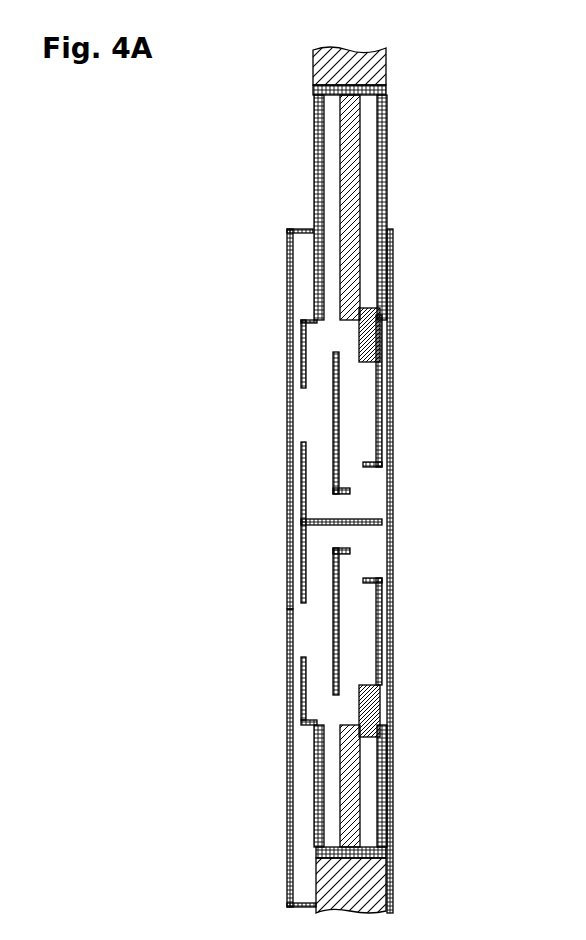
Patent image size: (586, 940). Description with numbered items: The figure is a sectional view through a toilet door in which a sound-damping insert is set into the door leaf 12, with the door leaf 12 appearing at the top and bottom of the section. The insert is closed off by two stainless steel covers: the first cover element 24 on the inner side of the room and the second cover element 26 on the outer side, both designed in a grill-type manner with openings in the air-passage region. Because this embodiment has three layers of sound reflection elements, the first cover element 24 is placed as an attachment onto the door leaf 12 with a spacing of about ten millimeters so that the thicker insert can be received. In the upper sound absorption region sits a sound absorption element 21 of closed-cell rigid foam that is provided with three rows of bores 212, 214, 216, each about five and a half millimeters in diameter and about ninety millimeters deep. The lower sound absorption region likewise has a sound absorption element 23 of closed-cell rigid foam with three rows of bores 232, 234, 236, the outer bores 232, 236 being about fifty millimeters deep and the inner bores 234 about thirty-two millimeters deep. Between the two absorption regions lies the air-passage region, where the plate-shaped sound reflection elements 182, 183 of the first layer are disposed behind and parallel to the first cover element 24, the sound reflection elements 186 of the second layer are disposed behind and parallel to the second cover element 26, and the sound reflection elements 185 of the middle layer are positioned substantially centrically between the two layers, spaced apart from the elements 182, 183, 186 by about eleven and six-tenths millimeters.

The door leaf 12 is at (372, 72).
The sound absorption element 21 is at (344, 223).
The bore 212 is at (332, 121).
The bore 214 is at (338, 153).
The bore 216 is at (370, 202).
The second cover element 26 is at (392, 258).
The first cover element 24 is at (288, 800).
The sound reflection element 182 is at (302, 364).
The sound reflection element 183 is at (302, 495).
The sound reflection element 185 is at (339, 397).
The sound reflection element 186 is at (378, 448).
The sound absorption element 23 is at (345, 774).
The outer bore 232 is at (330, 833).
The inner bore 234 is at (363, 782).
The outer bore 236 is at (368, 752).